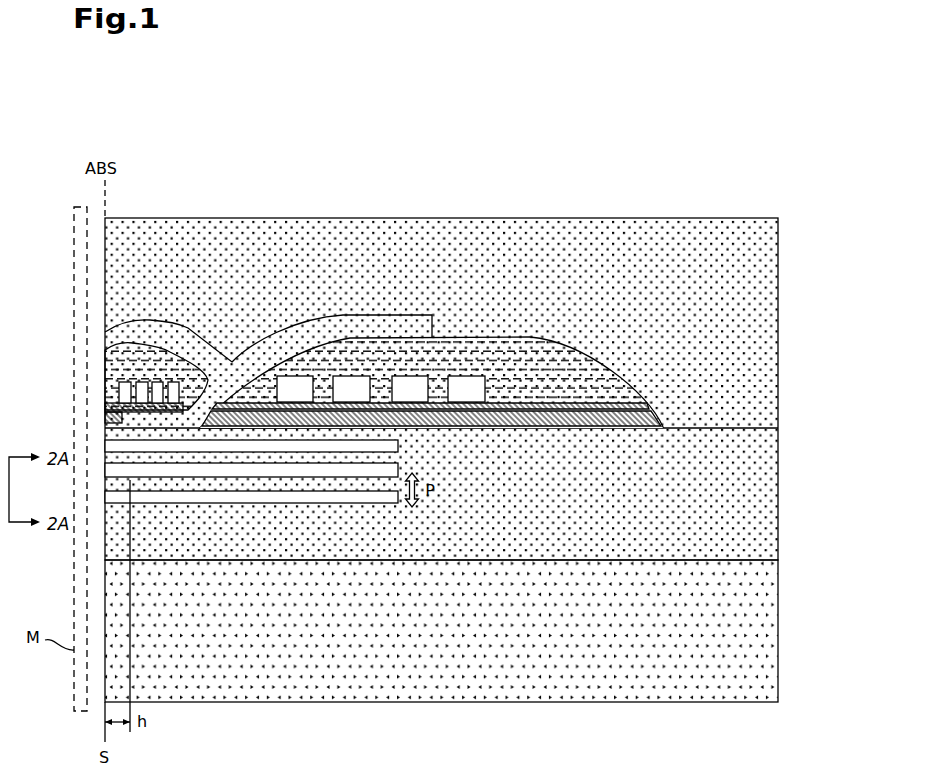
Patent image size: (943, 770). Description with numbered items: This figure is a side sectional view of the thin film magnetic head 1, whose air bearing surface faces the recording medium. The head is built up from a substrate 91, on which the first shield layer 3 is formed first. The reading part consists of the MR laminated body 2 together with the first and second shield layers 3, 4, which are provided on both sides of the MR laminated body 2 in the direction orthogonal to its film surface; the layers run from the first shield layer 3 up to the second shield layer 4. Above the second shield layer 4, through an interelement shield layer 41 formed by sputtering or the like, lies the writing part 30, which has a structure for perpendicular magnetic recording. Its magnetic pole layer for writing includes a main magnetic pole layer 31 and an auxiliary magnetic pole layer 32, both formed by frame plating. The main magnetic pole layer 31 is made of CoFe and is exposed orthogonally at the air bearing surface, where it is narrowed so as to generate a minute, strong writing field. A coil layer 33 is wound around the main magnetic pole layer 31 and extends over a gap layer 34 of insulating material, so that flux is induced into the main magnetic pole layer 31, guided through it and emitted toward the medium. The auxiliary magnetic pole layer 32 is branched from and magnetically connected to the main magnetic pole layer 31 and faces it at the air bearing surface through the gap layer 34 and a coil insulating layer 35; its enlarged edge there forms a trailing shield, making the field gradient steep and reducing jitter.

The thin film magnetic head 1 is at (367, 211).
The MR laminated body 2 is at (131, 481).
The first shield layer 3 is at (355, 503).
The second shield layer 4 is at (398, 468).
The writing part 30 is at (214, 322).
The main magnetic pole layer 31 is at (105, 423).
The auxiliary magnetic pole layer 32 is at (105, 343).
The coil layer 33 is at (172, 383).
The gap layer 34 is at (105, 410).
The coil insulating layer 35 is at (105, 363).
The interelement shield layer 41 is at (105, 446).
The substrate 91 is at (778, 592).